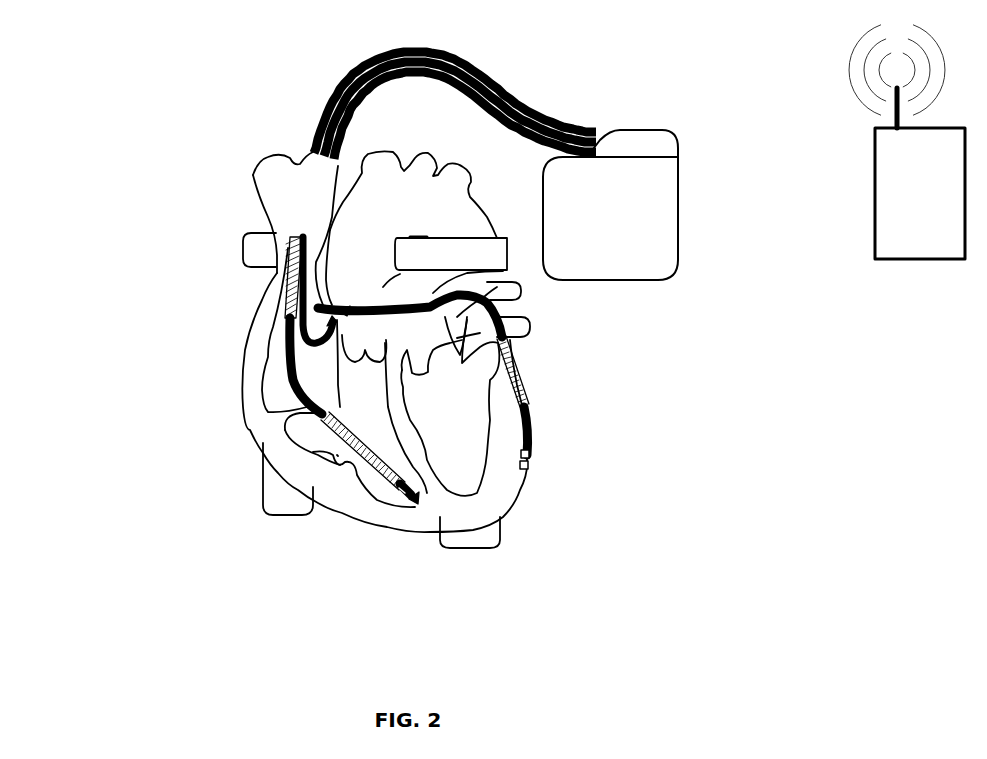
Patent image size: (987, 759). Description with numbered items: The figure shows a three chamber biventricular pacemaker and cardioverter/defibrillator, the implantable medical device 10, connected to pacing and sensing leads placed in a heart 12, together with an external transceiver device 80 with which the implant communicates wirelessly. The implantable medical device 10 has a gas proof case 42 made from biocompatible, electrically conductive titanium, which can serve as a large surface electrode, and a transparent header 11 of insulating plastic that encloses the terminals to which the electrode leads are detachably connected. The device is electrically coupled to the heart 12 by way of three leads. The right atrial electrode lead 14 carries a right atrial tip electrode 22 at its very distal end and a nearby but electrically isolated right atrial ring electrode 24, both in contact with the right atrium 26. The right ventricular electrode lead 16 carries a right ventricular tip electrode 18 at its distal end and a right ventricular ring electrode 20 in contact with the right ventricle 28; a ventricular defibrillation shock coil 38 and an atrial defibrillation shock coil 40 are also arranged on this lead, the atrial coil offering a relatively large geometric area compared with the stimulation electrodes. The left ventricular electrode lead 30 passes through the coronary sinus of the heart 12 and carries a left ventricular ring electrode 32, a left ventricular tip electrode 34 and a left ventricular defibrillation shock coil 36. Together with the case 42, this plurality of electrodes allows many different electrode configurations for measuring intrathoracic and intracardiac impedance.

The implantable medical device 10 is at (725, 264).
The header 11 is at (630, 140).
The heart 12 is at (214, 440).
The right atrial electrode lead 14 is at (382, 58).
The right ventricular electrode lead 16 is at (337, 98).
The right ventricular tip electrode 18 is at (413, 500).
The right ventricular ring electrode 20 is at (400, 493).
The right atrial tip electrode 22 is at (330, 320).
The right atrial ring electrode 24 is at (332, 333).
The right atrium 26 is at (278, 376).
The right ventricle 28 is at (337, 455).
The left ventricular electrode lead 30 is at (518, 140).
The left ventricular ring electrode 32 is at (528, 454).
The left ventricular tip electrode 34 is at (524, 468).
The left ventricular defibrillation shock coil 36 is at (523, 397).
The ventricular defibrillation shock coil 38 is at (333, 432).
The atrial defibrillation shock coil 40 is at (343, 312).
The case 42 is at (633, 257).
The external transceiver device 80 is at (920, 268).